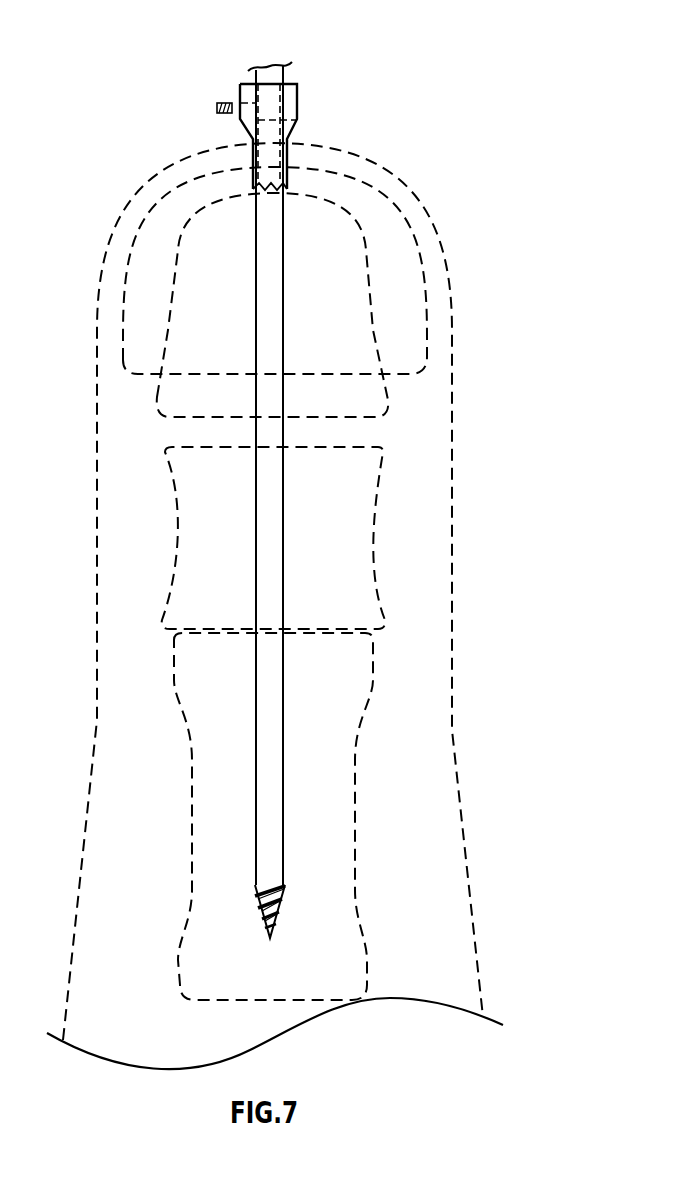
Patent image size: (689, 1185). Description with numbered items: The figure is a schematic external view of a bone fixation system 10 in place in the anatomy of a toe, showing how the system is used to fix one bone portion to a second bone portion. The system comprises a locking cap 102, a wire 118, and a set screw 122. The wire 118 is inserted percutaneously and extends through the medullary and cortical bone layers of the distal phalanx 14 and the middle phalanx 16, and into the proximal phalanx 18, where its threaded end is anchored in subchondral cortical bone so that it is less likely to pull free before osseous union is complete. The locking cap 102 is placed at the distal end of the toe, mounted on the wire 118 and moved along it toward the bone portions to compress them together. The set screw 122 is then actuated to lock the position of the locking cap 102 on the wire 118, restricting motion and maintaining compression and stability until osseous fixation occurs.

The spinal fixation system 10 is at (502, 336).
The distal phalanx 14 is at (177, 304).
The middle phalanx 16 is at (163, 625).
The proximal phalanx 18 is at (192, 791).
The wire 118 is at (277, 73).
The locking cap 102 is at (288, 102).
The set screw 122 is at (215, 110).